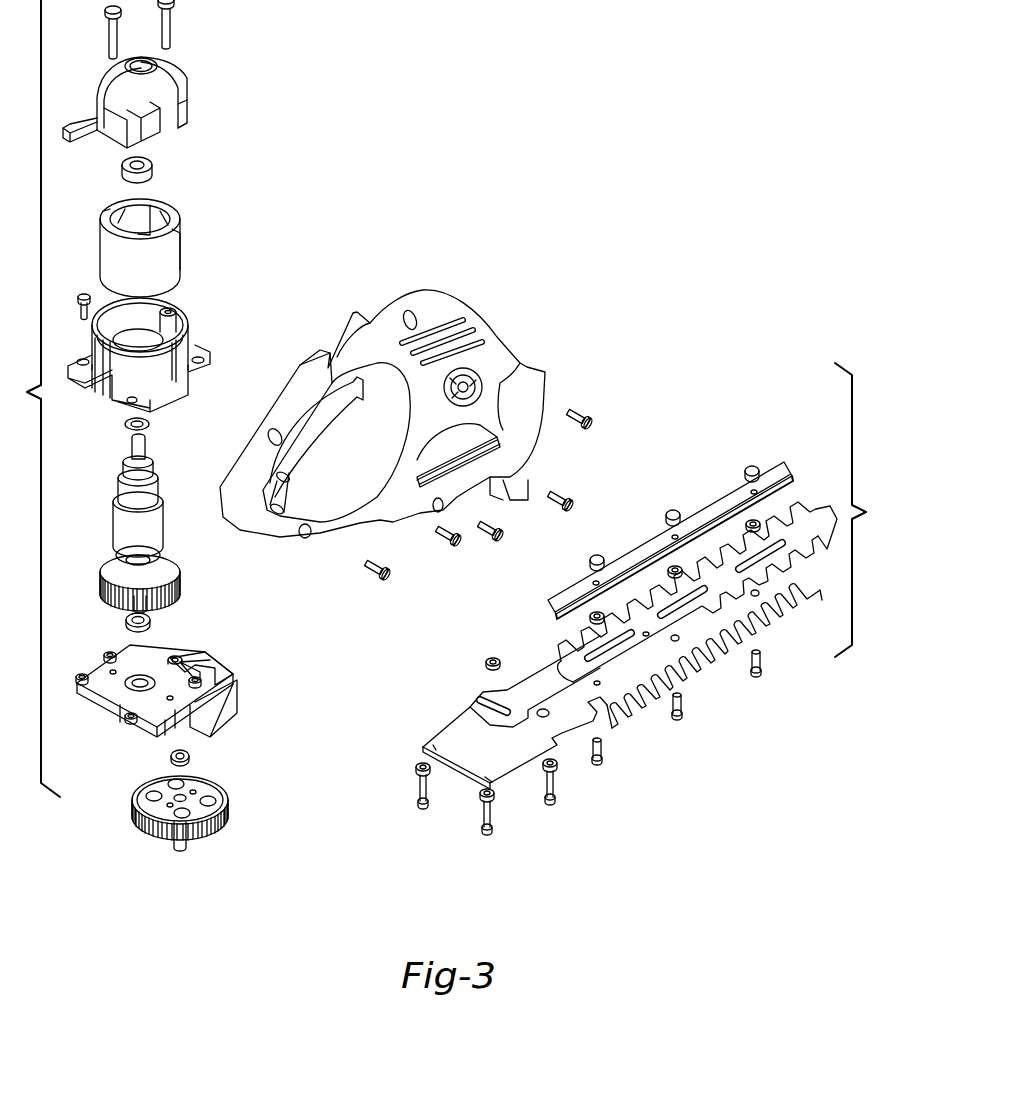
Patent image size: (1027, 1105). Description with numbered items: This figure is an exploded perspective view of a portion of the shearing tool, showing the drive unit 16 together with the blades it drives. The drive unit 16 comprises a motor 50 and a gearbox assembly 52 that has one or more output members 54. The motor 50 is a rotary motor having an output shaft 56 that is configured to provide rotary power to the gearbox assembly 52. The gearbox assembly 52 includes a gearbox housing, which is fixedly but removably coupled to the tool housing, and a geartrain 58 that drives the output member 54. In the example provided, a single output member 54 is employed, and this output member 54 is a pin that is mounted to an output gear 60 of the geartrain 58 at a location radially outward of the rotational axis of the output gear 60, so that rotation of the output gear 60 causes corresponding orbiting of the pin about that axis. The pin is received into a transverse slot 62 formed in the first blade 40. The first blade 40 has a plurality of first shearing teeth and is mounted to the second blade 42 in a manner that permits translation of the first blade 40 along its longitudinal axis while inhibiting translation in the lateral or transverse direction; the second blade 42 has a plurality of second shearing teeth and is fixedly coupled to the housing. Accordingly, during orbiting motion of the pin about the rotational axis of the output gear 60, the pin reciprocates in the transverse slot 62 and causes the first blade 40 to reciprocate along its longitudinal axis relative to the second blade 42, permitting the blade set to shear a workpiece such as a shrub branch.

The drive unit 16 is at (196, 293).
The first blade 40 is at (780, 530).
The second blade 42 is at (752, 620).
The motor 50 is at (117, 513).
The gearbox assembly 52 is at (258, 668).
The output member 54 is at (190, 838).
The output shaft 56 is at (148, 602).
The geartrain 58 is at (217, 660).
The output gear 60 is at (140, 822).
The transverse slot 62 is at (480, 700).